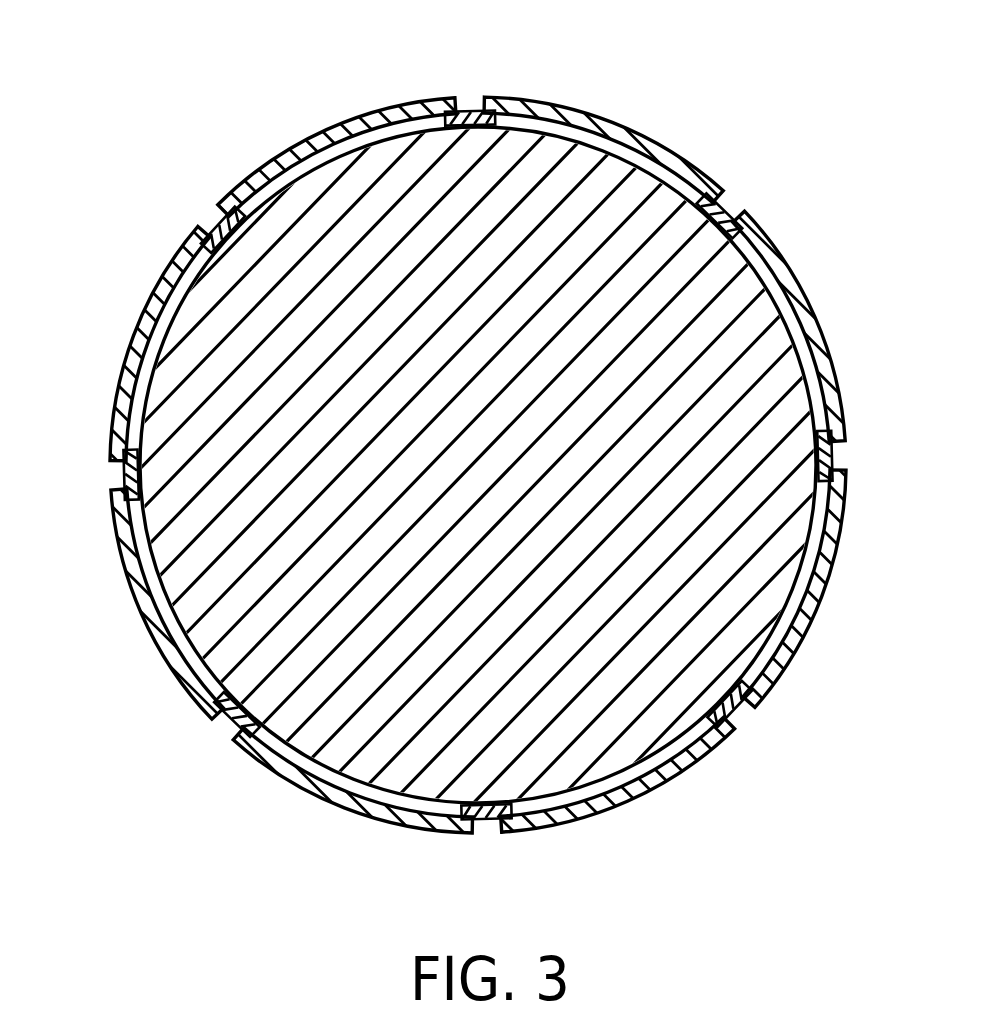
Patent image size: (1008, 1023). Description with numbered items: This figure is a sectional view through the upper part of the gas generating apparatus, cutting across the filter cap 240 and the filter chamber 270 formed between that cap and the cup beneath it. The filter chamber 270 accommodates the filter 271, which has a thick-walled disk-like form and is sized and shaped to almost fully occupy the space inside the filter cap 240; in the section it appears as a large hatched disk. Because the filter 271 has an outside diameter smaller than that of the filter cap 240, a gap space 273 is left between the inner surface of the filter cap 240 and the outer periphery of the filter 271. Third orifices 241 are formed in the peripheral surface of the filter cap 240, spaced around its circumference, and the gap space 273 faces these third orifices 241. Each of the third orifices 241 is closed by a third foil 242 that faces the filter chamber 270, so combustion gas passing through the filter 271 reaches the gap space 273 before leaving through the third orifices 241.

The filter cap 240 is at (150, 648).
The third orifices 241 is at (472, 103).
The third foils 242 is at (215, 222).
The filter chamber 270 is at (628, 101).
The filter 271 is at (313, 733).
The gap space 273 is at (555, 800).